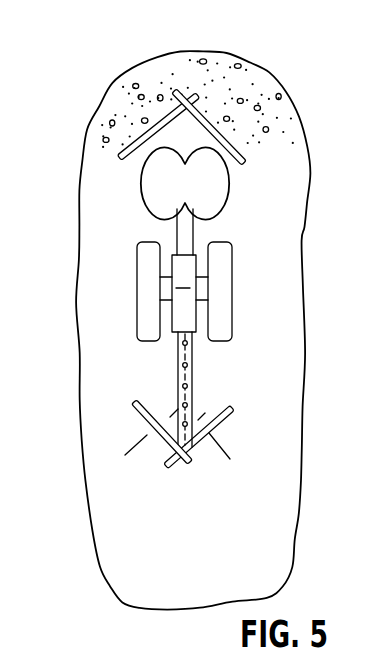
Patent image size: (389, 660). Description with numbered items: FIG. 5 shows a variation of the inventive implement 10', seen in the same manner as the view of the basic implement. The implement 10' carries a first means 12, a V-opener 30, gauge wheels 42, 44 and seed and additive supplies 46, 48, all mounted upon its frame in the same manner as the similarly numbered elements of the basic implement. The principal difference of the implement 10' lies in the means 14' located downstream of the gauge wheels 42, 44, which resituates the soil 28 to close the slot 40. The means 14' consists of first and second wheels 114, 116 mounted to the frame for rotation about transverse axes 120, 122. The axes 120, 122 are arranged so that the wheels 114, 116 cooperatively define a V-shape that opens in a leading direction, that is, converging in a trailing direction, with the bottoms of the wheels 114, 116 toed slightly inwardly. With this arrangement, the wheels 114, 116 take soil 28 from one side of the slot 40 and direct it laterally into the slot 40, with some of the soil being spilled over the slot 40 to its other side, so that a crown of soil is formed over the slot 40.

The implement 10' is at (222, 330).
The first means 12 is at (233, 127).
The means for resituating soil 14' is at (221, 507).
The soil 28 is at (282, 417).
The V-opener 30 is at (242, 188).
The slot 40 is at (187, 376).
The gauge wheel 42 is at (223, 307).
The gauge wheel 44 is at (142, 297).
The seed supply 46 is at (185, 275).
The additive supply 48 is at (180, 327).
The first wheel 114 is at (201, 440).
The second wheel 116 is at (170, 443).
The transverse axis 120 is at (230, 453).
The transverse axis 122 is at (138, 446).